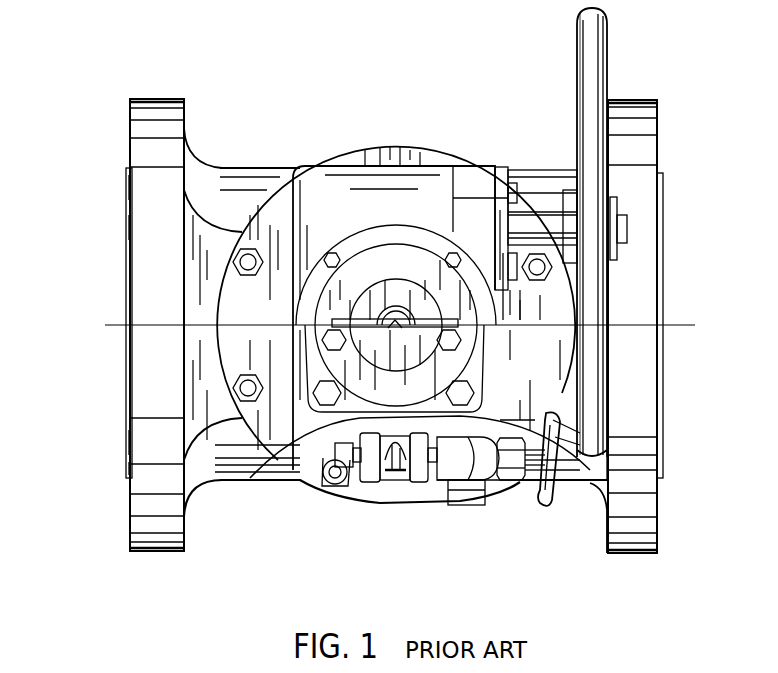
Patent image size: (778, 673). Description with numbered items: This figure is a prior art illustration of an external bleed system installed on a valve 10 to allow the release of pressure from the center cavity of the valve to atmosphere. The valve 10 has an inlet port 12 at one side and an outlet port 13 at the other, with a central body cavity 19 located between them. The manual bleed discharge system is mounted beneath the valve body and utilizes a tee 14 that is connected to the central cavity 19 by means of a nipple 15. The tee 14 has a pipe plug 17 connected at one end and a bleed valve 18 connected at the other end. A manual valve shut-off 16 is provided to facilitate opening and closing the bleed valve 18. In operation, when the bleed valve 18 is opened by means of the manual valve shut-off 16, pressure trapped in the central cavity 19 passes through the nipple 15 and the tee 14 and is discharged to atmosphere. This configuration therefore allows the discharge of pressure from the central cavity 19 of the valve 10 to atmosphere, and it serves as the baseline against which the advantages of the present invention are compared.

The valve 10 is at (118, 158).
The inlet port 12 is at (152, 407).
The outlet port 13 is at (637, 143).
The tee 14 is at (395, 460).
The nipple 15 is at (300, 470).
The manual valve shut-off 16 is at (512, 470).
The pipe plug 17 is at (345, 480).
The bleed valve 18 is at (472, 497).
The central body cavity 19 is at (372, 160).